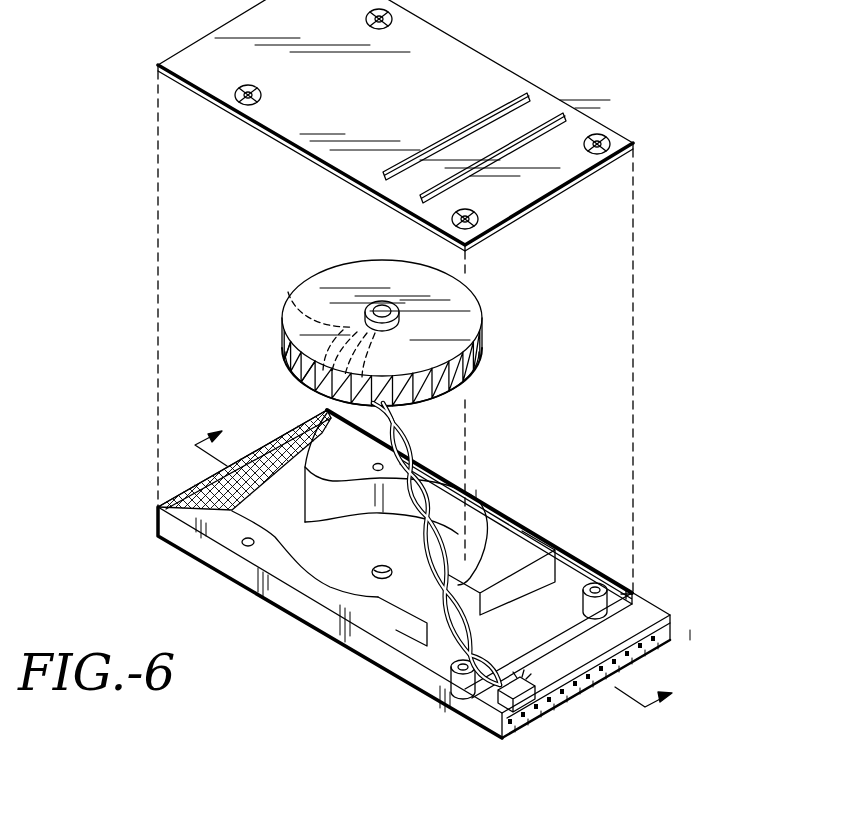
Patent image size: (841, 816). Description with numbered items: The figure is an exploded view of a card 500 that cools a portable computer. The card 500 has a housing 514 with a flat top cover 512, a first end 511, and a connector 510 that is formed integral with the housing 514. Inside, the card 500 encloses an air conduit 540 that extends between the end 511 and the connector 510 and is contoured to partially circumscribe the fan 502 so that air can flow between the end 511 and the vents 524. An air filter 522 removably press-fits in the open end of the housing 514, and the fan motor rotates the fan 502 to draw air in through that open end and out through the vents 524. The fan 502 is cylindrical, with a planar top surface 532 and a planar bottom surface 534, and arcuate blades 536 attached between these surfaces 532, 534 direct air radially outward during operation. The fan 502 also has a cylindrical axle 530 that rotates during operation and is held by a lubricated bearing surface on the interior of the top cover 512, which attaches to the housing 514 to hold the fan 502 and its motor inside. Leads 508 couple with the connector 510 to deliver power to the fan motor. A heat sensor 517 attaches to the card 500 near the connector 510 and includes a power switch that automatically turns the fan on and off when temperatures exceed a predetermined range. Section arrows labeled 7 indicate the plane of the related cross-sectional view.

The card 500 is at (690, 347).
The fan 502 is at (482, 303).
The leads 508 is at (402, 438).
The connector 510 is at (668, 614).
The first end 511 is at (200, 483).
The top cover 512 is at (455, 46).
The housing 514 is at (413, 675).
The heat sensor 517 is at (509, 745).
The air filter 522 is at (193, 483).
The vents 524 is at (528, 93).
The cylindrical axle 530 is at (380, 304).
The planar top surface 532 is at (312, 292).
The planar bottom surface 534 is at (297, 383).
The blades 536 is at (283, 337).
The air conduit 540 is at (518, 552).
The section line for FIG. 7 is at (443, 558).